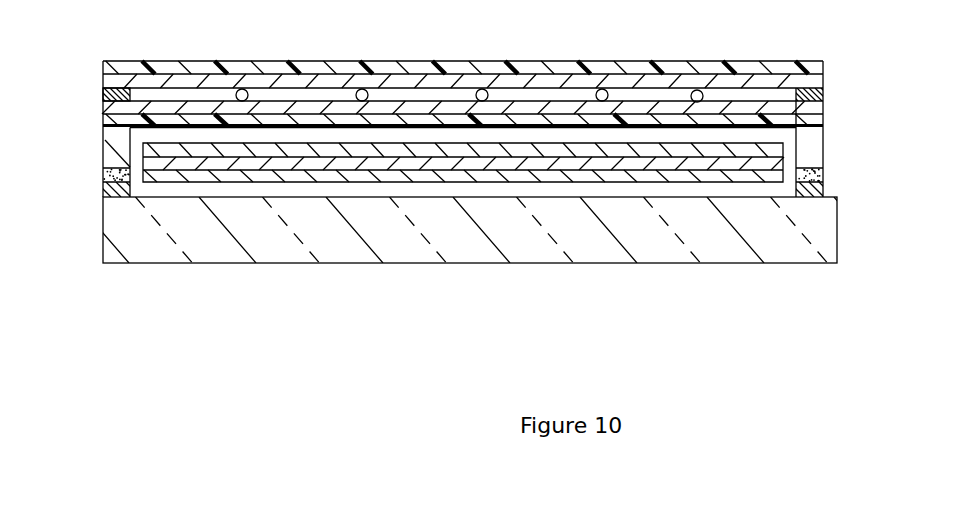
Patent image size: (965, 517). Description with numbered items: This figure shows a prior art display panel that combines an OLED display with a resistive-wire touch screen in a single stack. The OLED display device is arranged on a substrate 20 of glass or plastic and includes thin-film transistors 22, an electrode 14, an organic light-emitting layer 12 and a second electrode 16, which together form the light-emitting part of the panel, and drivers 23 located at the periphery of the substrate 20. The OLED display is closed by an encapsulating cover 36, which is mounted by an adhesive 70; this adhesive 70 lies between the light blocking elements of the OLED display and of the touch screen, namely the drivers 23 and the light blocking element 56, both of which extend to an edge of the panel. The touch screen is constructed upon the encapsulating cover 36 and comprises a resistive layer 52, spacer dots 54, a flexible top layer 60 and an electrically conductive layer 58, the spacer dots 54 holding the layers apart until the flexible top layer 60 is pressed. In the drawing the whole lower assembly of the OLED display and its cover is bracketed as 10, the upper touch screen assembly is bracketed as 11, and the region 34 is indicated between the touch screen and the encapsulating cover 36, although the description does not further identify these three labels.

The electrochromic device assembly 10 is at (877, 118).
The upper laminate / cover assembly 11 is at (930, 187).
The organic light-emitting layer 12 is at (795, 159).
The electrode 14 is at (143, 145).
The second electrode 16 is at (193, 176).
The substrate 20 is at (112, 222).
The thin-film transistors 22 is at (740, 183).
The drivers 23 is at (120, 195).
The gap region 34 is at (724, 138).
The encapsulating cover 36 is at (817, 140).
The resistive layer 52 is at (103, 107).
The spacer dots 54 is at (482, 89).
The light blocking element 56 is at (122, 90).
The electrically conductive layer 58 is at (820, 84).
The flexible top layer 60 is at (103, 66).
The adhesive 70 is at (107, 177).